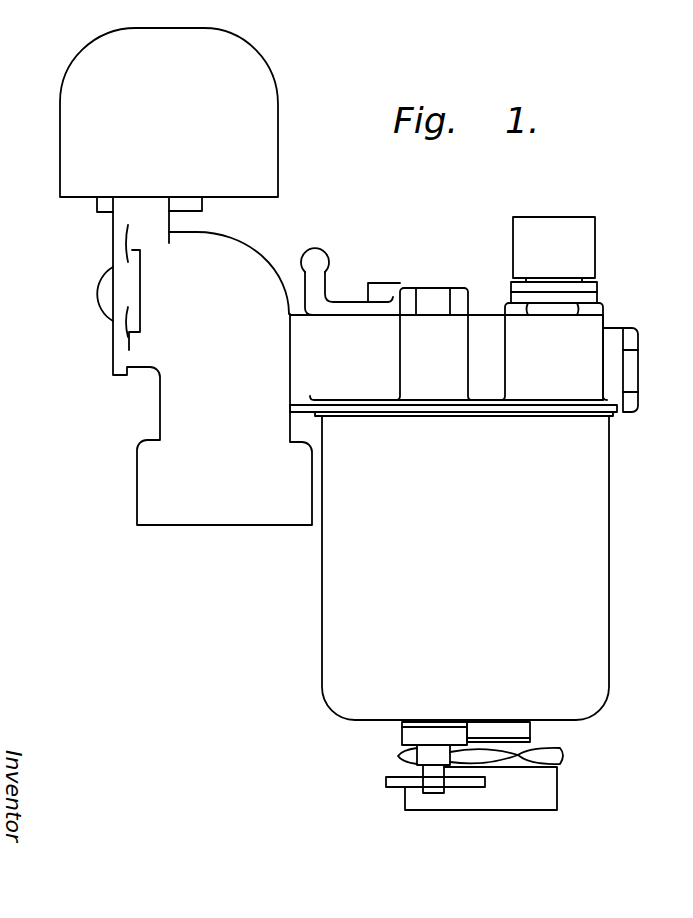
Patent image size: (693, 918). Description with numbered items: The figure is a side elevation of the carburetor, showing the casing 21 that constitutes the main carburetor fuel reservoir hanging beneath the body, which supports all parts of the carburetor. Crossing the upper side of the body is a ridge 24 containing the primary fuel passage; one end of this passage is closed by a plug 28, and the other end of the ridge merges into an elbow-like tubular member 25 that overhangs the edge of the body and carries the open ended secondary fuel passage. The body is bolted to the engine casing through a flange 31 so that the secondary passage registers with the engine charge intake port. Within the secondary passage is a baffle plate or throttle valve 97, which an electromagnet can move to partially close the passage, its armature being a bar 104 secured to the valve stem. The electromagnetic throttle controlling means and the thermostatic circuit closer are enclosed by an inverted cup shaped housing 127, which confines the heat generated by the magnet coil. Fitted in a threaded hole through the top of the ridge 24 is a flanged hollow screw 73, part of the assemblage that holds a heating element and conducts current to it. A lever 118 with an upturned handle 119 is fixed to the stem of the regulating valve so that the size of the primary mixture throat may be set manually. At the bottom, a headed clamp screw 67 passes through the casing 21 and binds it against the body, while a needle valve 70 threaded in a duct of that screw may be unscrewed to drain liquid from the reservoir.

The inverted cup shaped housing 127 is at (258, 48).
The armature bar 104 is at (195, 203).
The elbow-like tubular member 25 is at (264, 262).
The upturned handle 119 is at (317, 259).
The lever 118 is at (373, 291).
The ridge 24 is at (487, 314).
The hollow screw 73 is at (593, 312).
The plug 28 is at (627, 363).
The baffle plate or throttle valve 97 is at (108, 286).
The flange 31 is at (120, 345).
The casing 21 is at (610, 505).
The headed clamp screw 67 is at (410, 736).
The needle valve 70 is at (432, 773).